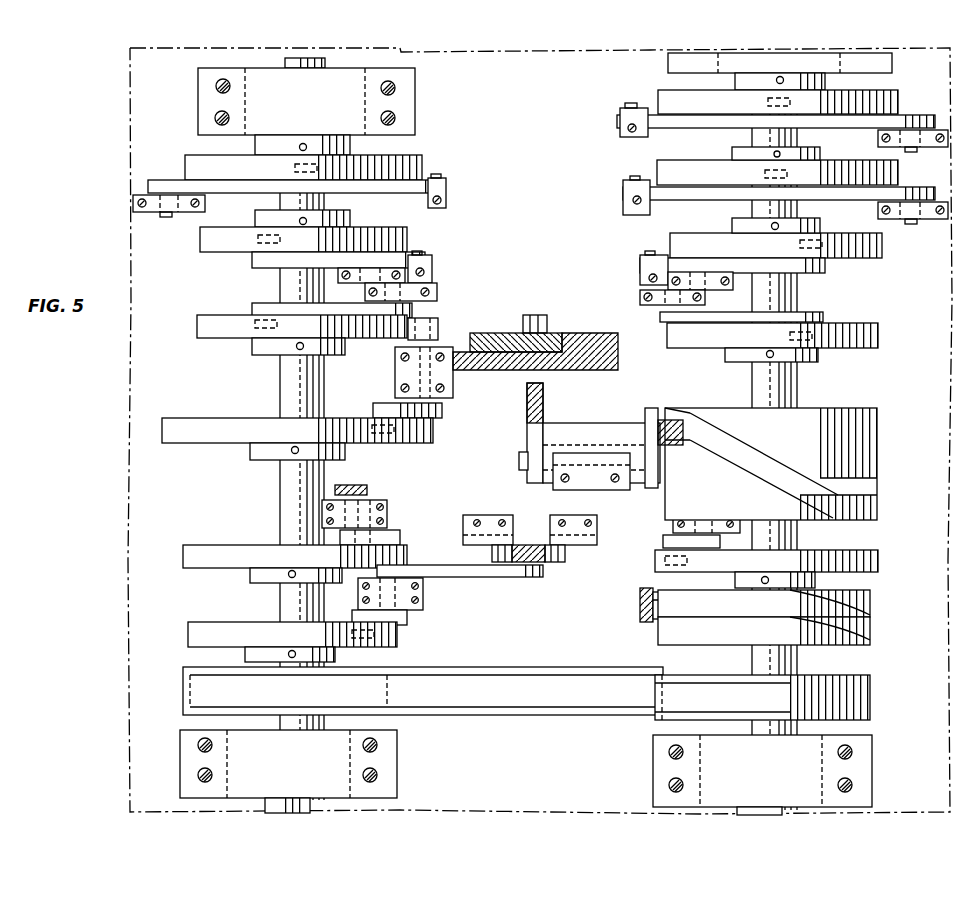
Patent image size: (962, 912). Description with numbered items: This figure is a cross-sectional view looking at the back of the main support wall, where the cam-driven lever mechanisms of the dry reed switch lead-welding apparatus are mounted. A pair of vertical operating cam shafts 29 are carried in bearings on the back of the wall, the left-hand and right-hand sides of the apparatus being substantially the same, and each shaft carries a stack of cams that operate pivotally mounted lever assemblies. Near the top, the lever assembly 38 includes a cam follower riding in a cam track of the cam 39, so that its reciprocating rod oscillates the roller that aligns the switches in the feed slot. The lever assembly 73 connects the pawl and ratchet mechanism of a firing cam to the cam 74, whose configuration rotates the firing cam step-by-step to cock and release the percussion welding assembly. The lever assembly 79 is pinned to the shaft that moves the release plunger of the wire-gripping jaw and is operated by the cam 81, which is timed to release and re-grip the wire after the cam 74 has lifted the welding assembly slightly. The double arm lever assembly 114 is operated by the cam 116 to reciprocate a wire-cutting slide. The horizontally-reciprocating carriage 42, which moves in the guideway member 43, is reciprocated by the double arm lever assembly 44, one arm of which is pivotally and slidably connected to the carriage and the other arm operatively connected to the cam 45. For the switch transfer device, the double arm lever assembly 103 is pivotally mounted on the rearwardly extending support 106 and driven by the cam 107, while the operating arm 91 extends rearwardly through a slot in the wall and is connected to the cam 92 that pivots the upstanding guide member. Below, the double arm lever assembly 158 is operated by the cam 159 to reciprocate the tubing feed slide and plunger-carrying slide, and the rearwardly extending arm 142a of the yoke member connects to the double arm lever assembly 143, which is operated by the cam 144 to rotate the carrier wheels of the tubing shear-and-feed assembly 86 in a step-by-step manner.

The operating cam shaft 29 is at (280, 478).
The lever assembly 38 is at (620, 130).
The cam 39 is at (658, 97).
The carriage 42 is at (600, 335).
The guideway member 43 is at (562, 340).
The double arm lever assembly 44 is at (395, 365).
The cam 45 is at (435, 434).
The lever assembly 73 is at (447, 200).
The cam 74 is at (415, 170).
The lever assembly 79 is at (440, 280).
The cam 81 is at (410, 240).
The tubing shear-and-feed assembly 86 is at (562, 585).
The operating arm 91 is at (640, 600).
The cam 92 is at (660, 633).
The double arm lever assembly 103 is at (645, 420).
The support 106 is at (600, 448).
The cam 107 is at (877, 428).
The double arm lever assembly 114 is at (415, 318).
The cam 116 is at (357, 338).
The rearwardly extending arm 142a is at (528, 578).
The double arm lever assembly 143 is at (425, 580).
The cam 144 is at (398, 635).
The double arm lever assembly 158 is at (368, 492).
The cam 159 is at (392, 562).